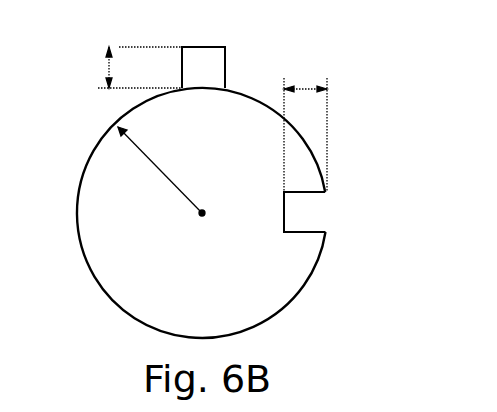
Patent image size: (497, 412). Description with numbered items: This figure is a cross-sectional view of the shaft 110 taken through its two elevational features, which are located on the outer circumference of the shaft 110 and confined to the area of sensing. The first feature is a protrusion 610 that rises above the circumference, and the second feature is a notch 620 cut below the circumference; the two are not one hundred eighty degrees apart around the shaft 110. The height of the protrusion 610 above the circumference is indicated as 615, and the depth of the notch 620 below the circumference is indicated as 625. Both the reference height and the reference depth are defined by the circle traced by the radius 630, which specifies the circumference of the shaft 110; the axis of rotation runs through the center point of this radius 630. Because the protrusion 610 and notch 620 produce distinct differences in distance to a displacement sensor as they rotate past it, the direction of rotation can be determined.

The shaft 110 is at (183, 289).
The protrusion 610 is at (203, 46).
The height of the protrusion 615 is at (107, 63).
The notch 620 is at (306, 229).
The depth of the notch 625 is at (306, 76).
The radius 630 is at (163, 170).